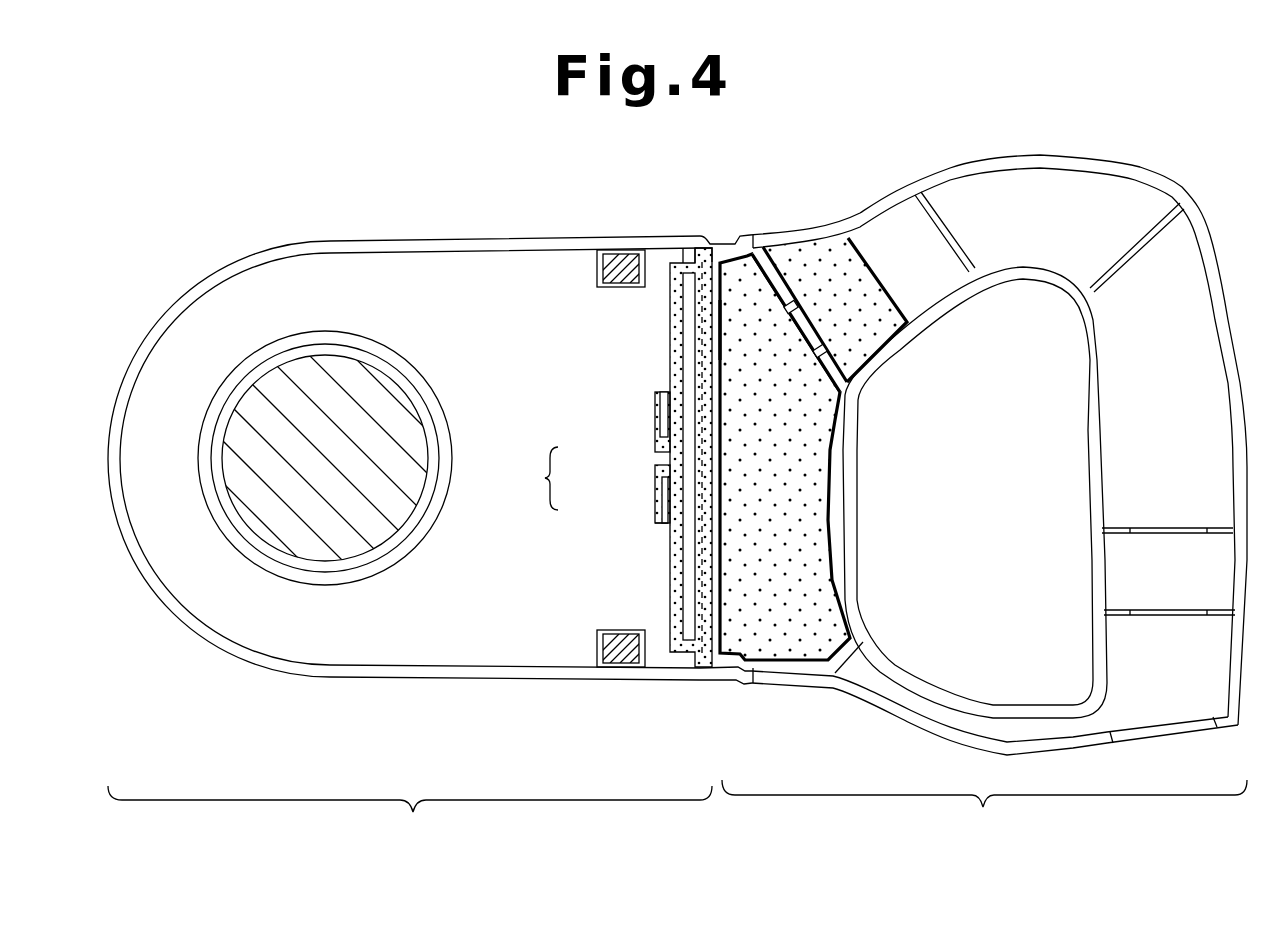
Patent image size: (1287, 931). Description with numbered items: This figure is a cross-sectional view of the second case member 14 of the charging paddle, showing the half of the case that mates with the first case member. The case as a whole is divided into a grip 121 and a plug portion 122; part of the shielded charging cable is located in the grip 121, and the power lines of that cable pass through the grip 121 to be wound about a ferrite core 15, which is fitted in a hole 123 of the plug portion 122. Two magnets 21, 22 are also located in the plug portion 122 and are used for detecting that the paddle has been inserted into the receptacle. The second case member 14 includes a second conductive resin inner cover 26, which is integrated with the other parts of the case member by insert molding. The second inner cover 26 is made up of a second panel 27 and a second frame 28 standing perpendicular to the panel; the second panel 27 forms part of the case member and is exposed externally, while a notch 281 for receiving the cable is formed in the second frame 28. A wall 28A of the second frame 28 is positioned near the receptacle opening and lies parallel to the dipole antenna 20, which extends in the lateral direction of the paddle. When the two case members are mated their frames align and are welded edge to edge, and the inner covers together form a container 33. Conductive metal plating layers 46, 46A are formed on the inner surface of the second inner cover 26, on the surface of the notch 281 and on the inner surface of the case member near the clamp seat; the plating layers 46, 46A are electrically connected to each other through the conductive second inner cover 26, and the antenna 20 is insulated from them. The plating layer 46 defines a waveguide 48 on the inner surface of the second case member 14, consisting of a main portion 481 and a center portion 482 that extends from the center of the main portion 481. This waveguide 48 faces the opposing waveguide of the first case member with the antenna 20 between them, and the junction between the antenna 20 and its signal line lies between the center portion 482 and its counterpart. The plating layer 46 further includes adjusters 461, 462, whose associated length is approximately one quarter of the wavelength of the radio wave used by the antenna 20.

The second case member 14 is at (466, 650).
The ferrite core 15 is at (333, 550).
The dipole antenna 20 is at (678, 612).
The magnet 21 is at (617, 250).
The magnet 22 is at (623, 670).
The second conductive resin inner cover 26 is at (854, 457).
The second panel 27 is at (805, 540).
The second frame 28 is at (832, 498).
The wall 28A is at (716, 334).
The container 33 is at (852, 663).
The conductive metal plating layer 46 is at (701, 236).
The conductive metal plating layer 46A is at (867, 332).
The waveguide 48 is at (532, 478).
The grip 121 is at (984, 506).
The plug portion 122 is at (410, 823).
The hole 123 is at (425, 478).
The notch 281 is at (812, 305).
The adjuster 461 is at (655, 512).
The adjuster 462 is at (655, 420).
The main portion 481 is at (690, 492).
The center portion 482 is at (670, 457).